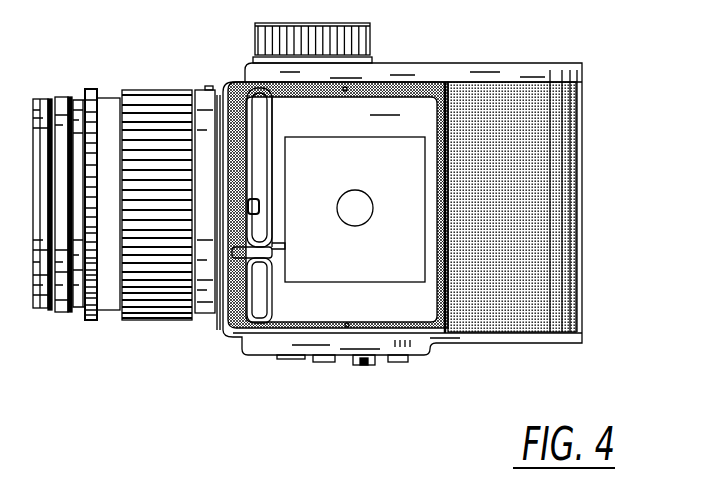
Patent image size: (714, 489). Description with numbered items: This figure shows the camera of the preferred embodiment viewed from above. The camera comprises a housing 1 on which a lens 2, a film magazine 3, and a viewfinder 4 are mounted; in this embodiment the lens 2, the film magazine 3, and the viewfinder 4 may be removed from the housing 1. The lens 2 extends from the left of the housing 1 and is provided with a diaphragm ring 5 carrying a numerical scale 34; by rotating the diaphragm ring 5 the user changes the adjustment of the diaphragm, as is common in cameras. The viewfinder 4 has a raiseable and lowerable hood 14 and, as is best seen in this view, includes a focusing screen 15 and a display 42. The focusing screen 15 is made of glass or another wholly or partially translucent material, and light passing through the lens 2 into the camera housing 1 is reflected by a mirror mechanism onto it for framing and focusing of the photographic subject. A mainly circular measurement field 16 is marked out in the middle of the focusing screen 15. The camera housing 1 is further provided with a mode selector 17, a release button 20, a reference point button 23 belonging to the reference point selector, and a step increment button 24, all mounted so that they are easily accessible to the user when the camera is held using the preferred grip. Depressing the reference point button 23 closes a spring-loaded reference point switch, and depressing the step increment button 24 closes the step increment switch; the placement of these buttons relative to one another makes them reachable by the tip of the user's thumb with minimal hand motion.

The housing 1 is at (421, 63).
The lens 2 is at (53, 93).
The film magazine 3 is at (466, 63).
The viewfinder 4 is at (362, 112).
The diaphragm ring 5 is at (92, 88).
The hood 14 is at (240, 82).
The focusing screen 15 is at (410, 253).
The measurement field 16 is at (360, 218).
The mode selector 17 is at (337, 362).
The release button 20 is at (200, 90).
The reference point button 23 is at (364, 366).
The step increment button 24 is at (294, 359).
The numerical scale 34 is at (108, 97).
The display 42 is at (287, 238).